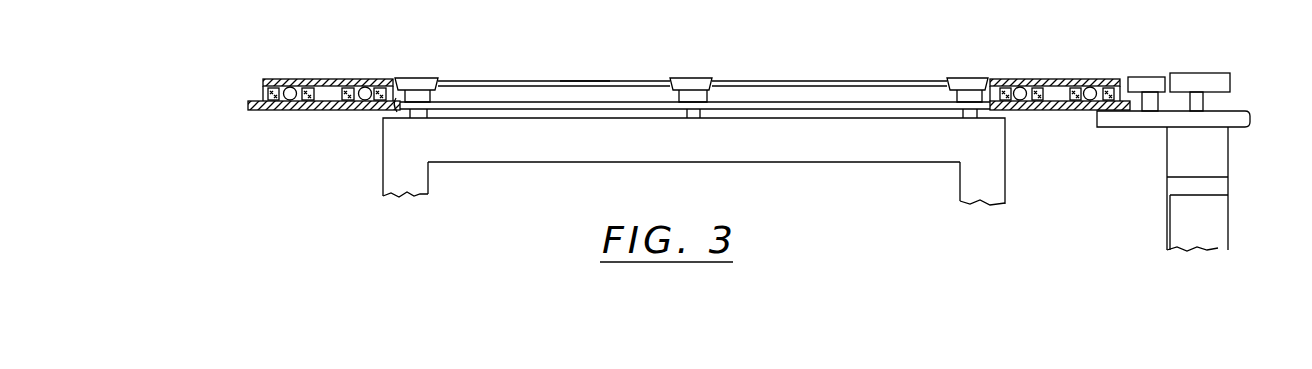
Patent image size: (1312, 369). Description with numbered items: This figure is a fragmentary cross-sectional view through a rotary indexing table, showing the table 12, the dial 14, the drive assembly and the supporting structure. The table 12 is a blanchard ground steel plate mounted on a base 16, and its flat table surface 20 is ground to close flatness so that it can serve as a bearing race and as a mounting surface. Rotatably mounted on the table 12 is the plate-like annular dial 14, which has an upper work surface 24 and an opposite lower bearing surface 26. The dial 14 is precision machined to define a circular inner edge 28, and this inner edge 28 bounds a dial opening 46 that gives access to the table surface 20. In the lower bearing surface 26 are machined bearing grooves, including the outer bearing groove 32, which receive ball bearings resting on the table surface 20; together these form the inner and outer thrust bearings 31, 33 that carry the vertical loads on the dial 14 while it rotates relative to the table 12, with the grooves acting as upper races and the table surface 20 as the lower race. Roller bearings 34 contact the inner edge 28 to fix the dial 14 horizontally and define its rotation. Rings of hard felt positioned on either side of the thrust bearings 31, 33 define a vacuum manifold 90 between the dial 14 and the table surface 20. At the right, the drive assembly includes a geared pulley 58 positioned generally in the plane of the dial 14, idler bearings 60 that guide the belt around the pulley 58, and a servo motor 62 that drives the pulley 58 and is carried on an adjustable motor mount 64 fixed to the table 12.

The table 12 is at (1053, 109).
The dial 14 is at (263, 83).
The base 16 is at (383, 150).
The table surface 20 is at (255, 102).
The upper work surface 24 is at (628, 80).
The lower bearing surface 26 is at (512, 90).
The inner edge 28 is at (751, 81).
The inner thrust bearing 31 is at (361, 68).
The outer bearing groove 32 is at (293, 84).
The outer thrust bearing 33 is at (287, 70).
The roller bearings 34 is at (427, 78).
The dial opening 46 is at (581, 81).
The geared pulley 58 is at (1218, 73).
The idler bearings 60 is at (1142, 77).
The servo motor 62 is at (1224, 153).
The motor mount 64 is at (1143, 128).
The vacuum manifold 90 is at (326, 100).